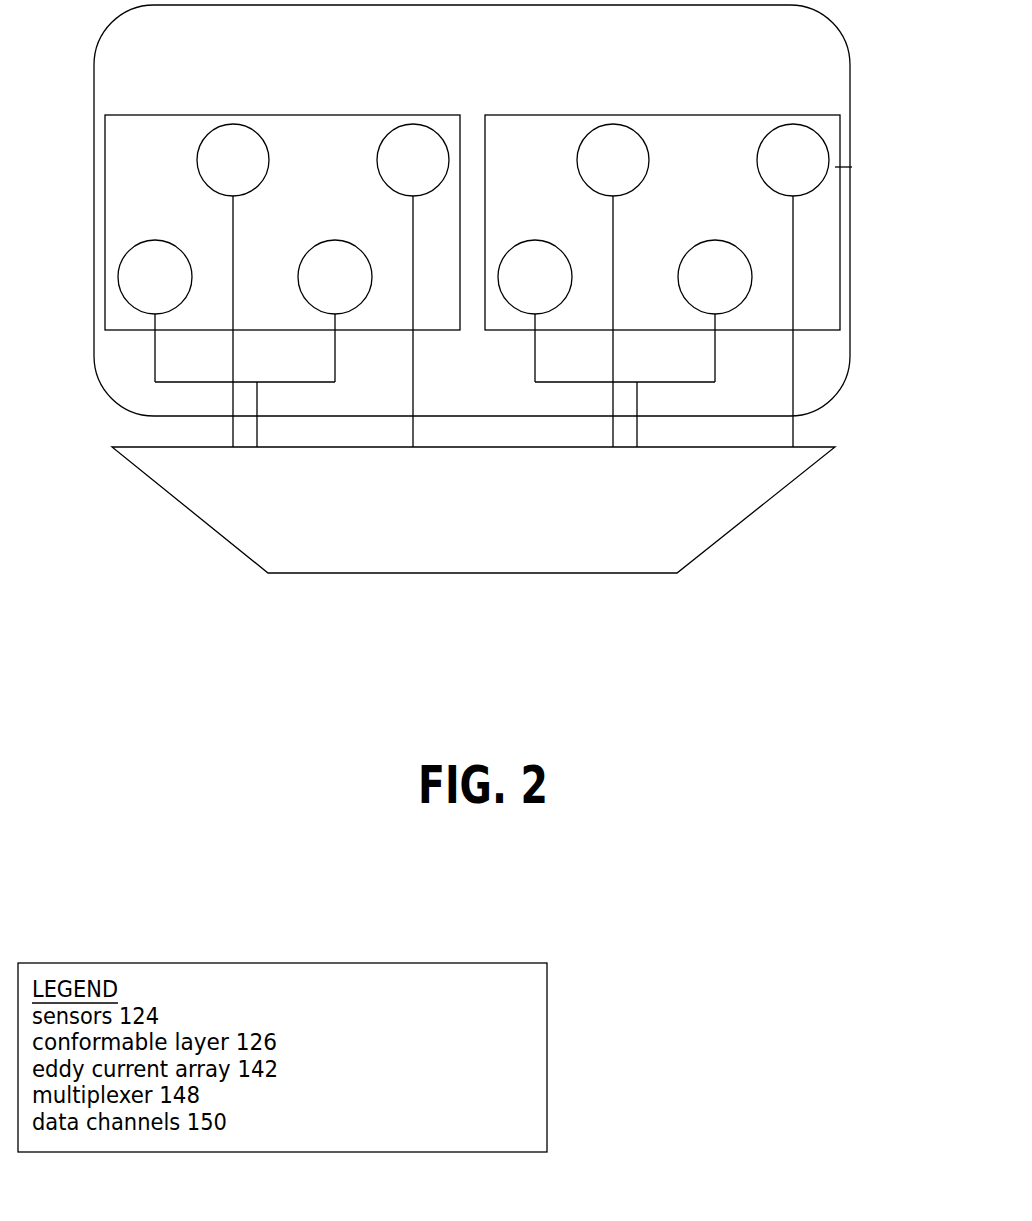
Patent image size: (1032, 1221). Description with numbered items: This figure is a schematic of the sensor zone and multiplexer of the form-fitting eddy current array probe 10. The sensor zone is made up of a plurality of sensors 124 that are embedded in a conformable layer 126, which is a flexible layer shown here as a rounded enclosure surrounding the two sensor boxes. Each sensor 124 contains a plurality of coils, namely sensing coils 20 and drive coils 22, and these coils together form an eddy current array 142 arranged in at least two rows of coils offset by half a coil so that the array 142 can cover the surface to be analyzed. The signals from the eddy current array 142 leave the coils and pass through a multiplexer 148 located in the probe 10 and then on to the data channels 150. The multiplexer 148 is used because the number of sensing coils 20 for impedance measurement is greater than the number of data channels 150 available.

The form-fitting eddy current array probe 10 is at (307, 622).
The sensing coils 20 is at (156, 253).
The drive coils 22 is at (215, 160).
The sensors 124 is at (118, 323).
The conformable layer 126 is at (838, 94).
The eddy current array 142 is at (834, 167).
The multiplexer 148 is at (710, 535).
The data channels 150 is at (157, 360).